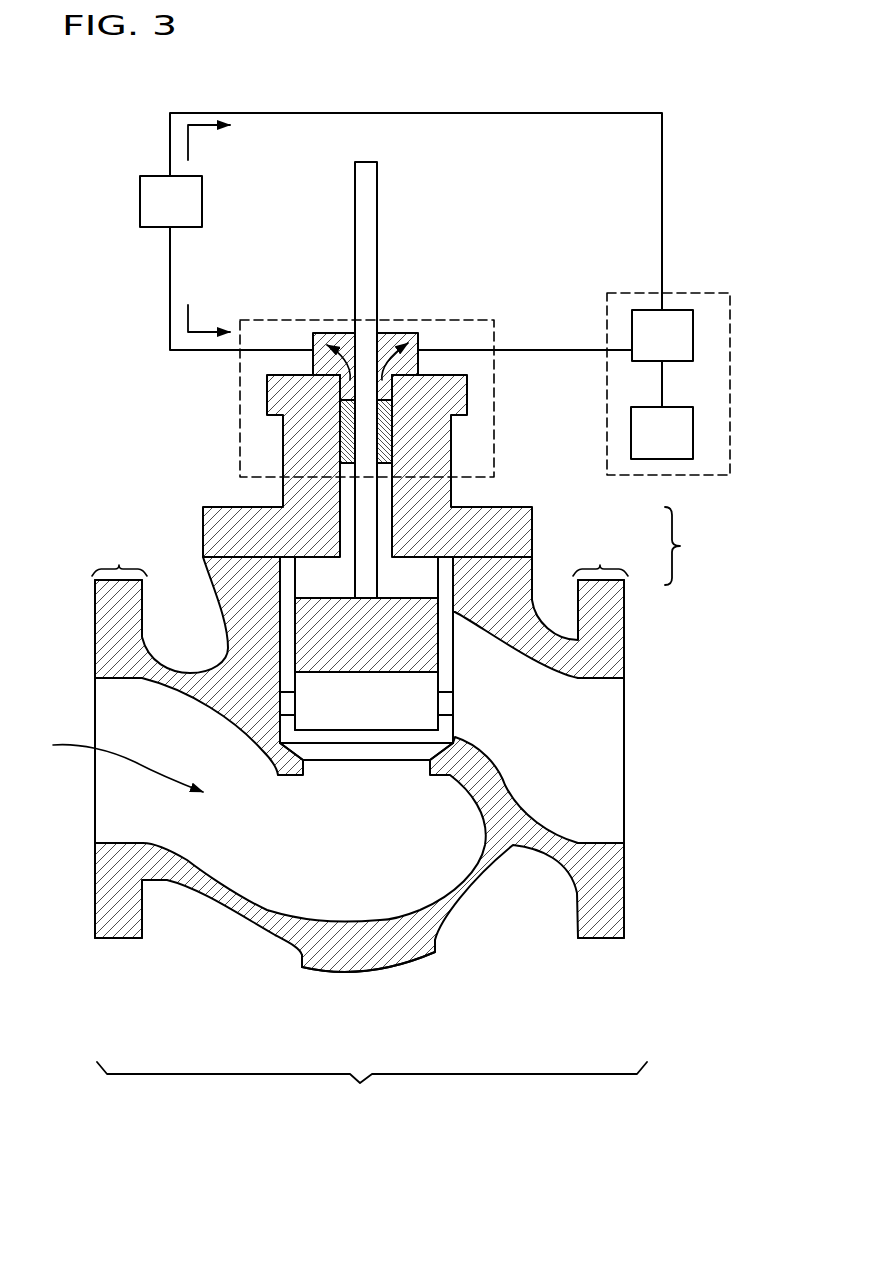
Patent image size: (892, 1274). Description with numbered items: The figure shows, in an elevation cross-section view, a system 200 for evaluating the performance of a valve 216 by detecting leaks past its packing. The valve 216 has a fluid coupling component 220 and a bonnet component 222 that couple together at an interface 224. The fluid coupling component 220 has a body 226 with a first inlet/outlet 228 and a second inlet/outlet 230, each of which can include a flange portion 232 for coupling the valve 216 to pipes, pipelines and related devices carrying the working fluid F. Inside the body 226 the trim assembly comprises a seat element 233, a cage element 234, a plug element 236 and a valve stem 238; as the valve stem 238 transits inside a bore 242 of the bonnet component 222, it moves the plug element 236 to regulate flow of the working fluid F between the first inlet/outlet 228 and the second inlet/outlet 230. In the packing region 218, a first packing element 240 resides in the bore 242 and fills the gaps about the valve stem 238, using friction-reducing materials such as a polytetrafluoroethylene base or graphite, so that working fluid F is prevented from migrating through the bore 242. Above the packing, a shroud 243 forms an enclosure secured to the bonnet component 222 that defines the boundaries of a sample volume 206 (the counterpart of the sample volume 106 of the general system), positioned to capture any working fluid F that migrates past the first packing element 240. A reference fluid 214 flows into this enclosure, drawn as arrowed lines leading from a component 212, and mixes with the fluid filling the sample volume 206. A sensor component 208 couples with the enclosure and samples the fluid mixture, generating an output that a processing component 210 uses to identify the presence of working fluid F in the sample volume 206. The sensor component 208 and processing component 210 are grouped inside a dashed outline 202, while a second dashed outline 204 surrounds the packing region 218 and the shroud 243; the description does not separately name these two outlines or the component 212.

The sample volume 106 is at (473, 368).
The system 200 is at (595, 100).
The controller 202 is at (635, 290).
The packing monitoring assembly 204 is at (483, 318).
The sample volume 206 is at (335, 332).
The sensor component 208 is at (683, 346).
The processing component 210 is at (682, 446).
The actuator 212 is at (190, 216).
The reference fluid 214 is at (188, 143).
The valve 216 is at (372, 1091).
The packing region 218 is at (325, 432).
The fluid coupling component 220 is at (82, 947).
The bonnet component 222 is at (108, 425).
The interface 224 is at (695, 546).
The body 226 is at (362, 968).
The first inlet/outlet 228 is at (90, 792).
The second inlet/outlet 230 is at (638, 757).
The flange portion 232 is at (119, 736).
The seat element 233 is at (358, 747).
The cage element 234 is at (450, 685).
The plug element 236 is at (388, 657).
The valve stem 238 is at (367, 217).
The first packing element 240 is at (347, 452).
The bore 242 is at (387, 503).
The shroud 243 is at (403, 332).
The working fluid F is at (78, 744).